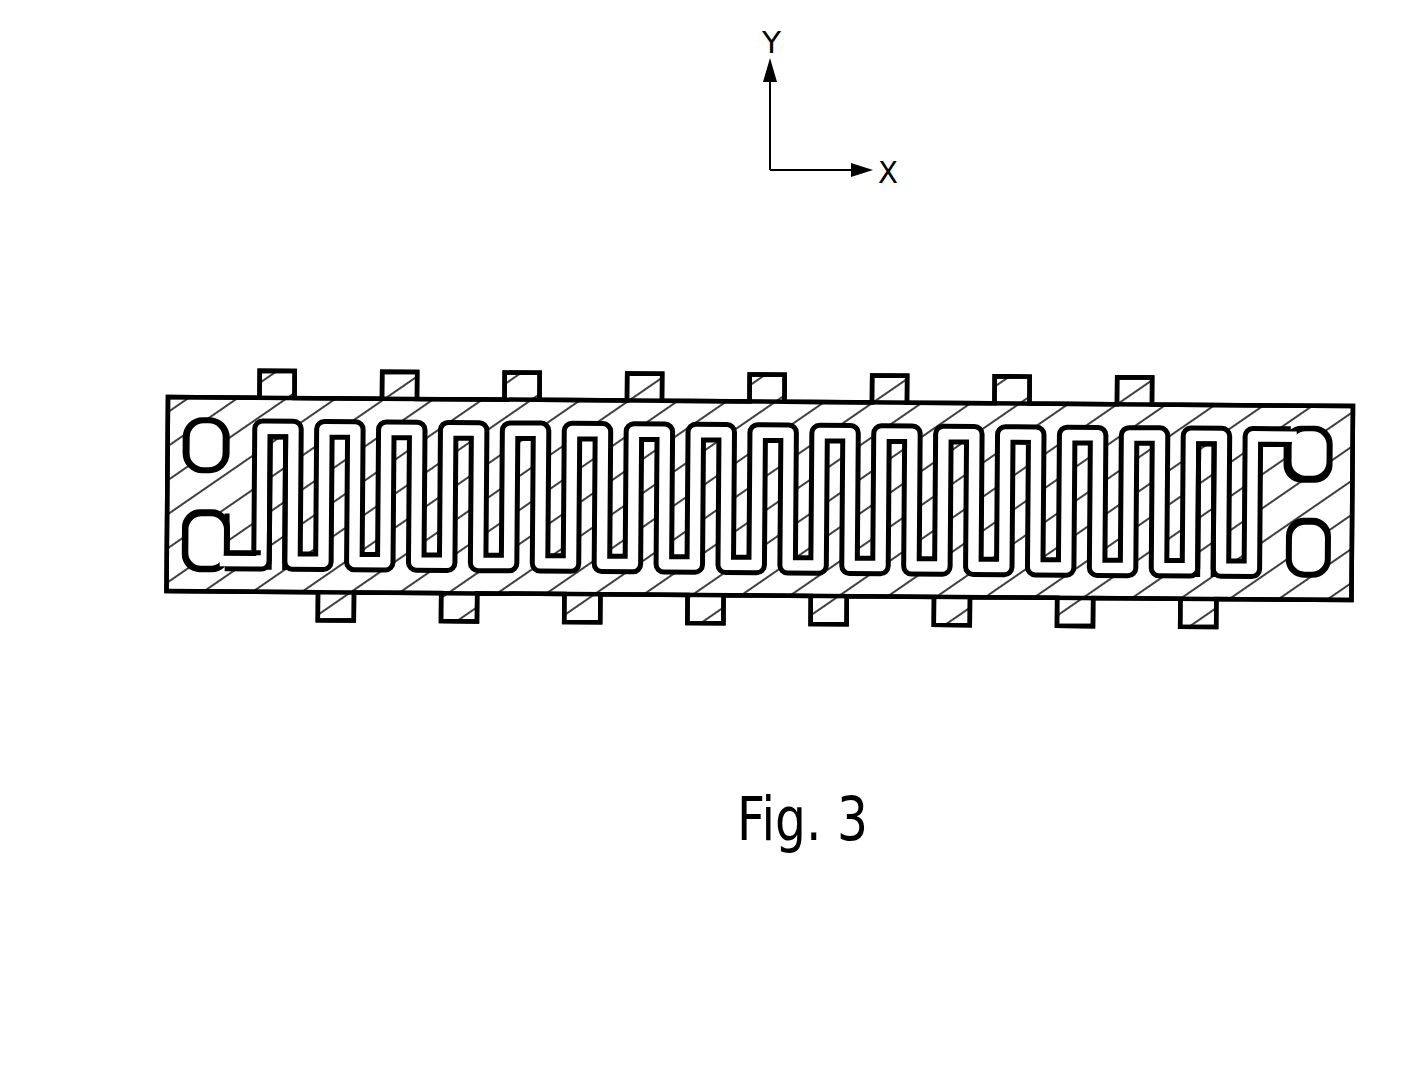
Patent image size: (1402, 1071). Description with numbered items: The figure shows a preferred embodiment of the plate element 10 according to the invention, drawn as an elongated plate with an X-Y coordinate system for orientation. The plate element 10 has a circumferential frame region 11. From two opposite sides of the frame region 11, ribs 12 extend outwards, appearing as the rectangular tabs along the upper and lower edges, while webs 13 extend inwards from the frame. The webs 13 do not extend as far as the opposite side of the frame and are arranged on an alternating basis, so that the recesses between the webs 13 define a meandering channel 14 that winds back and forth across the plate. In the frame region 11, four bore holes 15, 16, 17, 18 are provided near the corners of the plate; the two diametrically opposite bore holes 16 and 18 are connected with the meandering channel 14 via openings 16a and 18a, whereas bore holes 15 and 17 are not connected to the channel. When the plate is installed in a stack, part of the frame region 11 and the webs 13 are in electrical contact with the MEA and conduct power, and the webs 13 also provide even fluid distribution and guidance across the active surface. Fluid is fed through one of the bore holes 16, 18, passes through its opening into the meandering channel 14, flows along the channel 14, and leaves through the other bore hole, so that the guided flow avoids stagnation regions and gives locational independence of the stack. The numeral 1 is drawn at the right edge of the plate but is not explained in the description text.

The fuel cell plate 1 is at (1335, 498).
The plate element 10 is at (1106, 228).
The frame region 11 is at (178, 490).
The ribs 12 is at (527, 392).
The webs 13 is at (770, 560).
The meandering channel 14 is at (278, 445).
The bore hole 15 is at (205, 440).
The bore hole 16 is at (205, 575).
The opening 16a is at (245, 562).
The bore hole 17 is at (1310, 582).
The bore hole 18 is at (1313, 455).
The opening 18a is at (1270, 440).